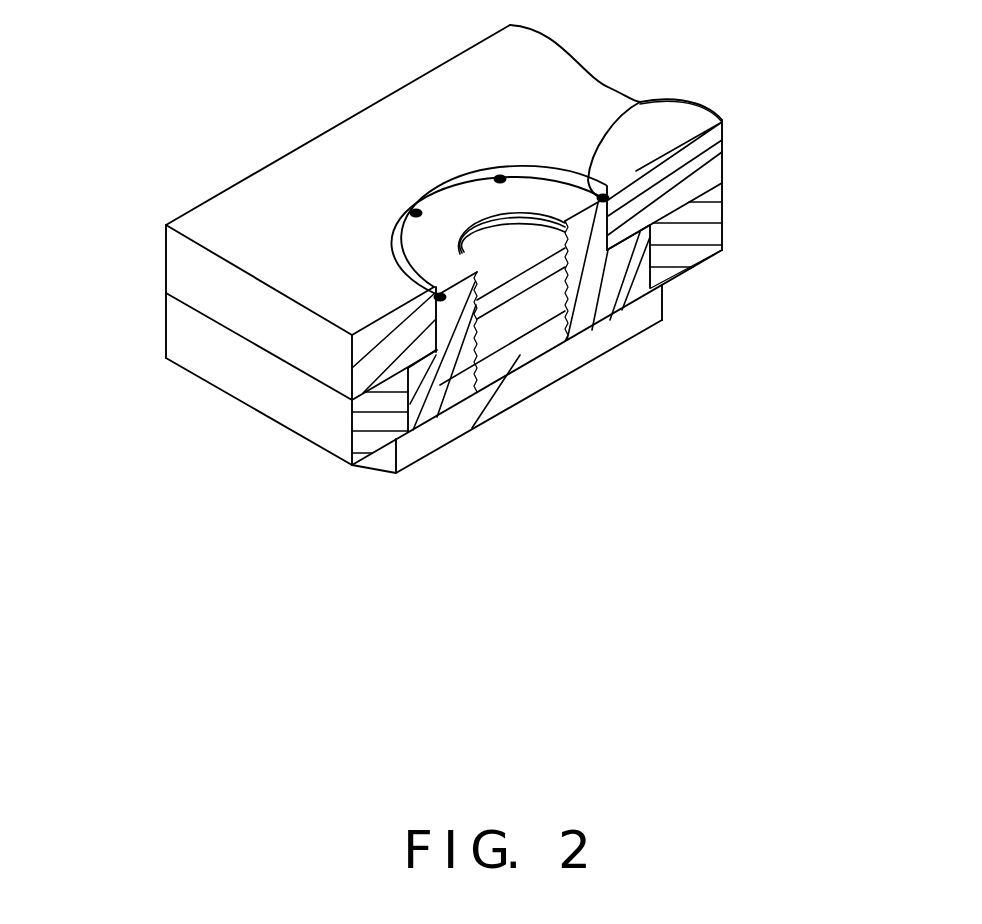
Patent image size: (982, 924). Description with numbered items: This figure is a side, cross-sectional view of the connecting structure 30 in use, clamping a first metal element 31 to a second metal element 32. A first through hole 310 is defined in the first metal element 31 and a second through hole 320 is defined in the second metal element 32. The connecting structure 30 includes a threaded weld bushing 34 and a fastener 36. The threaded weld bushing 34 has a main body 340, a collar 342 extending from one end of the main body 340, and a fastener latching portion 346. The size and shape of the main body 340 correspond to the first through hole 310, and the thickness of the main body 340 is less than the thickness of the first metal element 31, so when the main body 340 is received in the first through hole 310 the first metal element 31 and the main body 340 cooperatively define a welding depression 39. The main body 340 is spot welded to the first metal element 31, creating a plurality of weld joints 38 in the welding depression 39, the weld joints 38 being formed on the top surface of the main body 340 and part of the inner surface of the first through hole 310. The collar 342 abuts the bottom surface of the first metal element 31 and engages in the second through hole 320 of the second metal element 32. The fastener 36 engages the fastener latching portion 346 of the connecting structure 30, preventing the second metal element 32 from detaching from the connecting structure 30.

The connecting structure 30 is at (812, 421).
The first metal element 31 is at (272, 210).
The first through hole 310 is at (724, 154).
The second metal element 32 is at (180, 334).
The second through hole 320 is at (655, 257).
The threaded weld bushing 34 is at (556, 368).
The main body 340 is at (595, 222).
The collar 342 is at (452, 392).
The fastener latching portion 346 is at (473, 368).
The fastener 36 is at (620, 337).
The weld joints 38 is at (500, 180).
The welding depression 39 is at (640, 102).